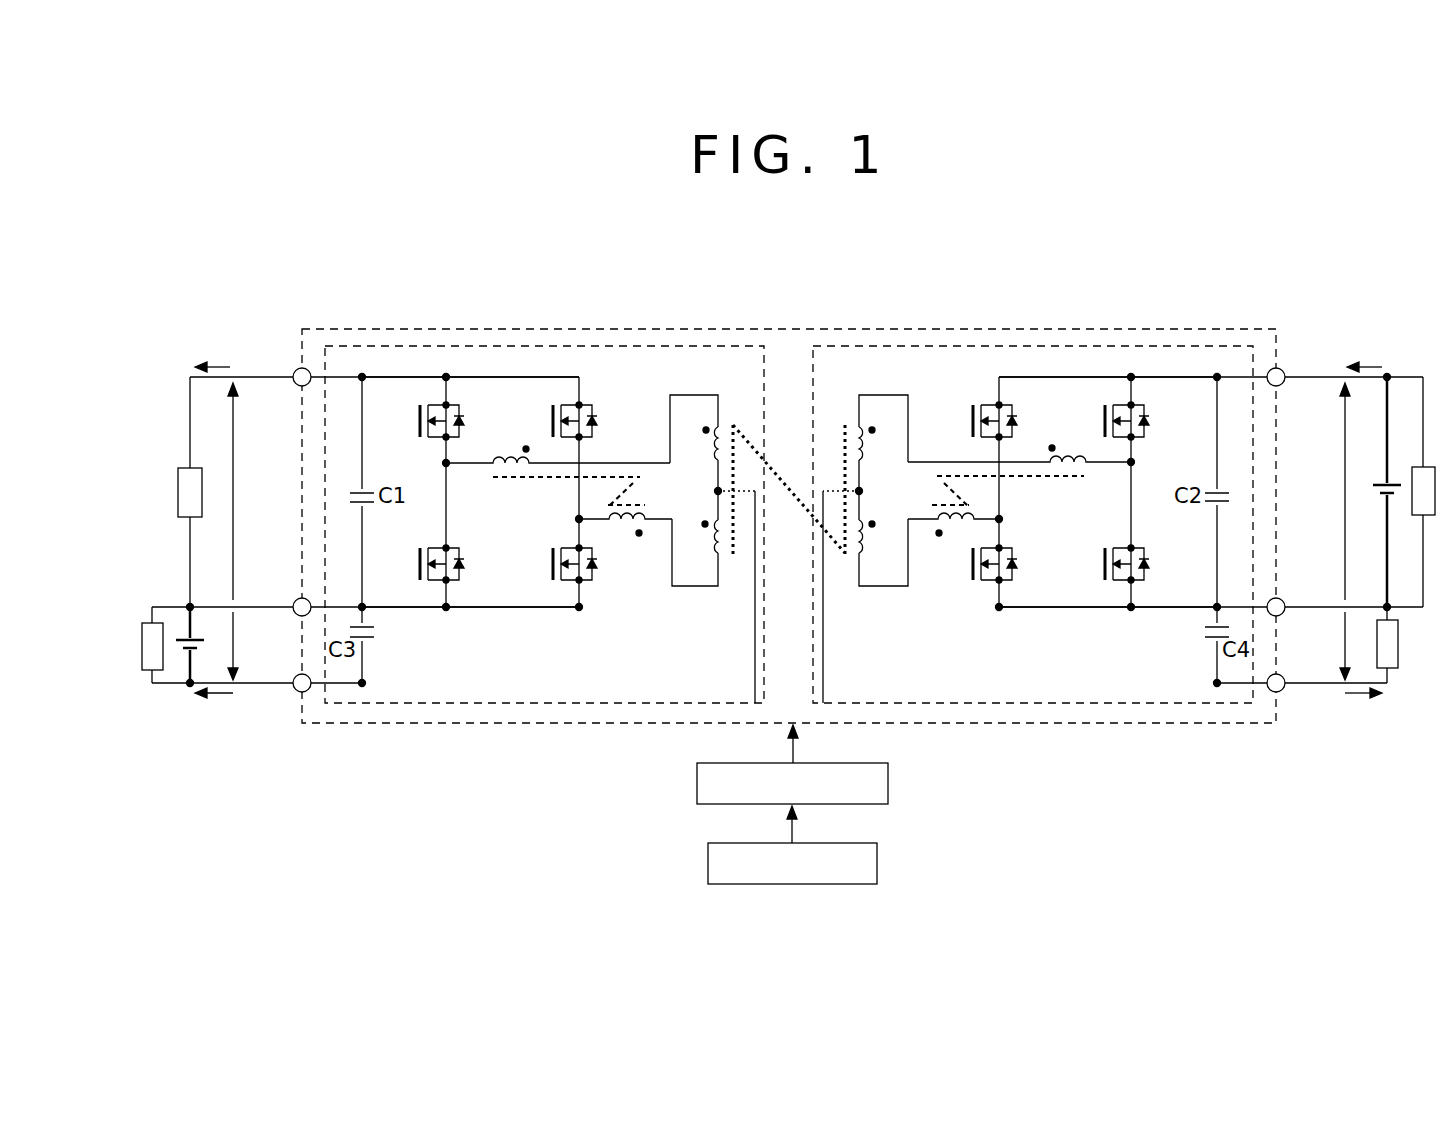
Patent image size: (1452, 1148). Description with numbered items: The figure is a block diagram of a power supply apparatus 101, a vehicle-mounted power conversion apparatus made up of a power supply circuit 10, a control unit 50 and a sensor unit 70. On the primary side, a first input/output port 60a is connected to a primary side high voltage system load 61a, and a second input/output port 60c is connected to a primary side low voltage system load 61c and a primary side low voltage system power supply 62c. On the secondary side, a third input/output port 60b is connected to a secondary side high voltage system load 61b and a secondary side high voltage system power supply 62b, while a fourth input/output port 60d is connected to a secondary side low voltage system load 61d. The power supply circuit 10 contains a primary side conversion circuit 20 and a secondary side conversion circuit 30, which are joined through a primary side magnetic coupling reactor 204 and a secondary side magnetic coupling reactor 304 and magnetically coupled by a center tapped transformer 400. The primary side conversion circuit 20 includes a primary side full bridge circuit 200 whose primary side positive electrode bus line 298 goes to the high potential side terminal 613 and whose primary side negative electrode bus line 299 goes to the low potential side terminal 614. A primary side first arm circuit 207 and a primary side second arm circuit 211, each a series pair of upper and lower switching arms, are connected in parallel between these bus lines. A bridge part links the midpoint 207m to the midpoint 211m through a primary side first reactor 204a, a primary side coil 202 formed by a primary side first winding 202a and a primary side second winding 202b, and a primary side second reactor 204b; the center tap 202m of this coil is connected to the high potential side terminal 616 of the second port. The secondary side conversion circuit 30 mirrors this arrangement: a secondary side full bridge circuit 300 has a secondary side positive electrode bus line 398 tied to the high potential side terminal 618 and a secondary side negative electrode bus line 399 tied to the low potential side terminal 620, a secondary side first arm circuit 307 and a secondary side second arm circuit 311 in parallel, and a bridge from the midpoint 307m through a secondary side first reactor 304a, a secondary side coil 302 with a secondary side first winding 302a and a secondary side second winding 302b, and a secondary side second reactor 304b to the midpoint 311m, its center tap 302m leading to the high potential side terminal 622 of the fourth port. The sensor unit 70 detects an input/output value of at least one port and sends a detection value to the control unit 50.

The power supply apparatus 101 is at (318, 253).
The power supply circuit 10 is at (1165, 329).
The primary side conversion circuit 20 is at (537, 333).
The secondary side conversion circuit 30 is at (1042, 333).
The control unit 50 is at (890, 782).
The sensor unit 70 is at (879, 862).
The primary side full bridge circuit 200 is at (622, 345).
The secondary side full bridge circuit 300 is at (955, 345).
The primary side coil 202 is at (718, 380).
The primary side first winding 202a is at (708, 445).
The primary side second winding 202b is at (707, 562).
The center tap 202m is at (715, 491).
The secondary side coil 302 is at (860, 380).
The secondary side first winding 302a is at (870, 445).
The secondary side second winding 302b is at (876, 562).
The center tap 302m is at (862, 491).
The primary side magnetic coupling reactor 204 is at (563, 492).
The primary side first reactor 204a is at (498, 455).
The primary side second reactor 204b is at (633, 534).
The secondary side magnetic coupling reactor 304 is at (1039, 492).
The secondary side first reactor 304a is at (1056, 455).
The secondary side second reactor 304b is at (951, 528).
The primary side first arm circuit 207 is at (433, 594).
The primary side second arm circuit 211 is at (563, 594).
The secondary side first arm circuit 307 is at (1100, 594).
The secondary side second arm circuit 311 is at (975, 594).
The midpoint of the primary side first arm circuit 207m is at (443, 463).
The midpoint of the primary side second arm circuit 211m is at (576, 519).
The midpoint of the secondary side first arm circuit 307m is at (1134, 462).
The midpoint of the secondary side second arm circuit 311m is at (1002, 519).
The primary side positive electrode bus line 298 is at (392, 376).
The primary side negative electrode bus line 299 is at (388, 609).
The secondary side positive electrode bus line 398 is at (1158, 376).
The secondary side negative electrode bus line 399 is at (1180, 609).
The transformer 400 is at (792, 455).
The high potential side terminal 613 is at (297, 369).
The low potential side terminal 614 is at (308, 600).
The high potential side terminal 616 is at (300, 693).
The high potential side terminal 618 is at (1283, 369).
The low potential side terminal 620 is at (1270, 600).
The high potential side terminal 622 is at (1281, 693).
The first input/output port 60a is at (288, 480).
The third input/output port 60b is at (1290, 480).
The second input/output port 60c is at (288, 632).
The fourth input/output port 60d is at (1290, 632).
The primary side high voltage system load 61a is at (200, 468).
The secondary side high voltage system load 61b is at (1420, 467).
The primary side low voltage system load 61c is at (152, 672).
The secondary side low voltage system load 61d is at (1396, 670).
The secondary side high voltage system power supply 62b is at (1384, 497).
The primary side low voltage system power supply 62c is at (185, 636).